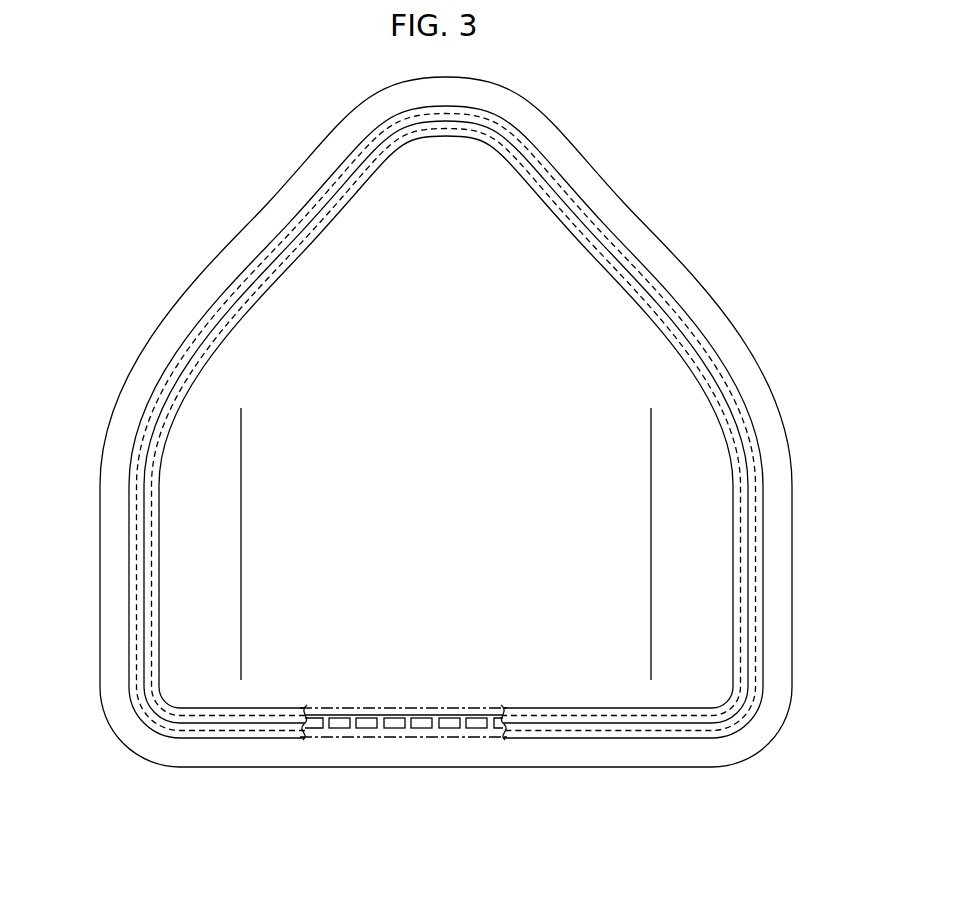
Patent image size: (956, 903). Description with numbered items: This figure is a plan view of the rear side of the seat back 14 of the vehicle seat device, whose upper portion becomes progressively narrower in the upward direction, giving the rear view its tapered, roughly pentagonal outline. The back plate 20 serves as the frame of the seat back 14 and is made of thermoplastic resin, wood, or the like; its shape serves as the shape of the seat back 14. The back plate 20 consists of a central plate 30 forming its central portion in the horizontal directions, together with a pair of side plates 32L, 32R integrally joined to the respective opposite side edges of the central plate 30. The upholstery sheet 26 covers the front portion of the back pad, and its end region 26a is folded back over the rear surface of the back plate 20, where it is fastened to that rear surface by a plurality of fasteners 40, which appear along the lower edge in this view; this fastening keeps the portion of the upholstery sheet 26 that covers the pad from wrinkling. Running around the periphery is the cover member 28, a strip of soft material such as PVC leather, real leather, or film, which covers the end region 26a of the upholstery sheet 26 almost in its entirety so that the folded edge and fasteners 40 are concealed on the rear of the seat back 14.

The seat back 14 is at (687, 173).
The back plate 20 is at (601, 697).
The upholstery sheet 26 is at (557, 147).
The end region 26a is at (320, 736).
The cover member 28 is at (692, 324).
The central plate 30 is at (323, 253).
The side plate 32L is at (220, 607).
The side plate 32R is at (672, 607).
The fasteners 40 is at (416, 716).